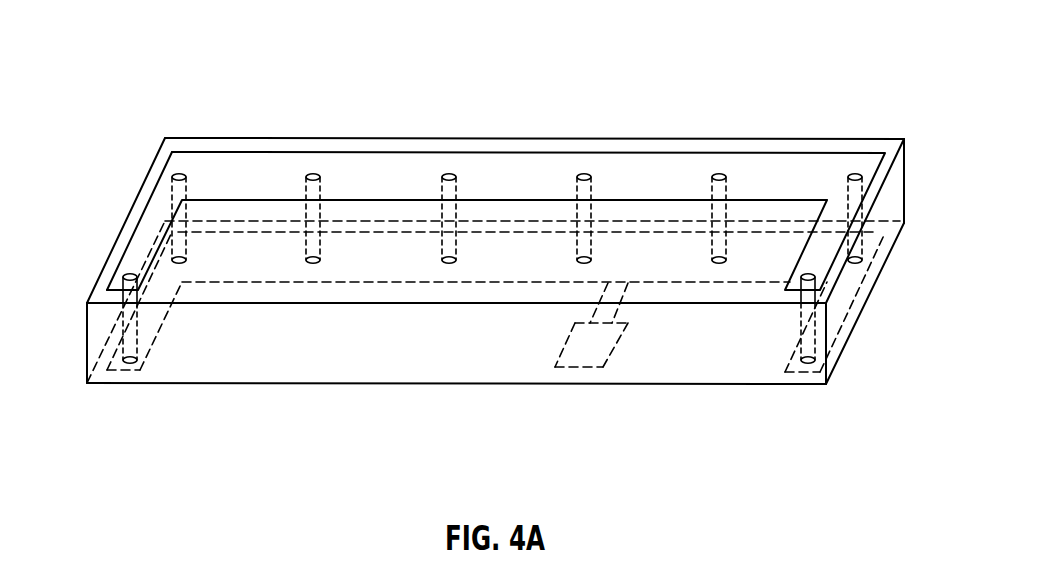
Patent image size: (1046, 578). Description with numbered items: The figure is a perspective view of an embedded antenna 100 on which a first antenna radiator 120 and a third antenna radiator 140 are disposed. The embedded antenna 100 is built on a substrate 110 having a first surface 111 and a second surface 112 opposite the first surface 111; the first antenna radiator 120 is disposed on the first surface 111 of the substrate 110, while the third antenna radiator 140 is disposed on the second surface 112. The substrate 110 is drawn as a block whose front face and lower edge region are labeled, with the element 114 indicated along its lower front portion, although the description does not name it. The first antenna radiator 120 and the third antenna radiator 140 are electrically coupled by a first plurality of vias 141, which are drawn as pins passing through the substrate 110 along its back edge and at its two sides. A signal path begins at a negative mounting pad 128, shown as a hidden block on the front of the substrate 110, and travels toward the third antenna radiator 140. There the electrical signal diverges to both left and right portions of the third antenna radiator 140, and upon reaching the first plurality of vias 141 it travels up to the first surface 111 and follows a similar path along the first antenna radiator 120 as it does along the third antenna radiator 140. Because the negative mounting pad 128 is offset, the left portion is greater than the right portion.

The embedded antenna 100 is at (144, 46).
The substrate 110 is at (242, 384).
The first surface 111 is at (142, 207).
The second surface 112 is at (380, 367).
The bottom edge 114 is at (522, 384).
The first antenna radiator 120 is at (514, 172).
The negative mounting pad 128 is at (596, 368).
The third antenna radiator 140 is at (837, 313).
The first plurality of vias 141 is at (314, 173).